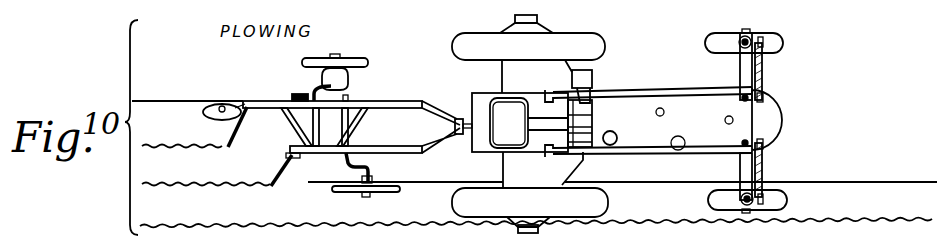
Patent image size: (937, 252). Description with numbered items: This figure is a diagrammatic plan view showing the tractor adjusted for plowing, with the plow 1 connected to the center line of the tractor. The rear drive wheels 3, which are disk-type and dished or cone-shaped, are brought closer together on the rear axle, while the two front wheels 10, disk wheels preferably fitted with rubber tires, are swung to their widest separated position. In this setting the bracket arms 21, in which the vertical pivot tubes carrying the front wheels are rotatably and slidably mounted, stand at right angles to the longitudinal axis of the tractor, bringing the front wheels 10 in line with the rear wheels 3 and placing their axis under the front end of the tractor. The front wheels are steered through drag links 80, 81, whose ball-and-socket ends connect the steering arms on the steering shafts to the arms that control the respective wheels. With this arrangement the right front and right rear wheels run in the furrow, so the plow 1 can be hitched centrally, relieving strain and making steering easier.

The implement frame 1 is at (652, 70).
The rear drive wheels 3 is at (452, 40).
The front wheels 10 is at (785, 40).
The bracket arms 21 is at (740, 69).
The drag link 80 is at (762, 165).
The drag link 81 is at (762, 70).